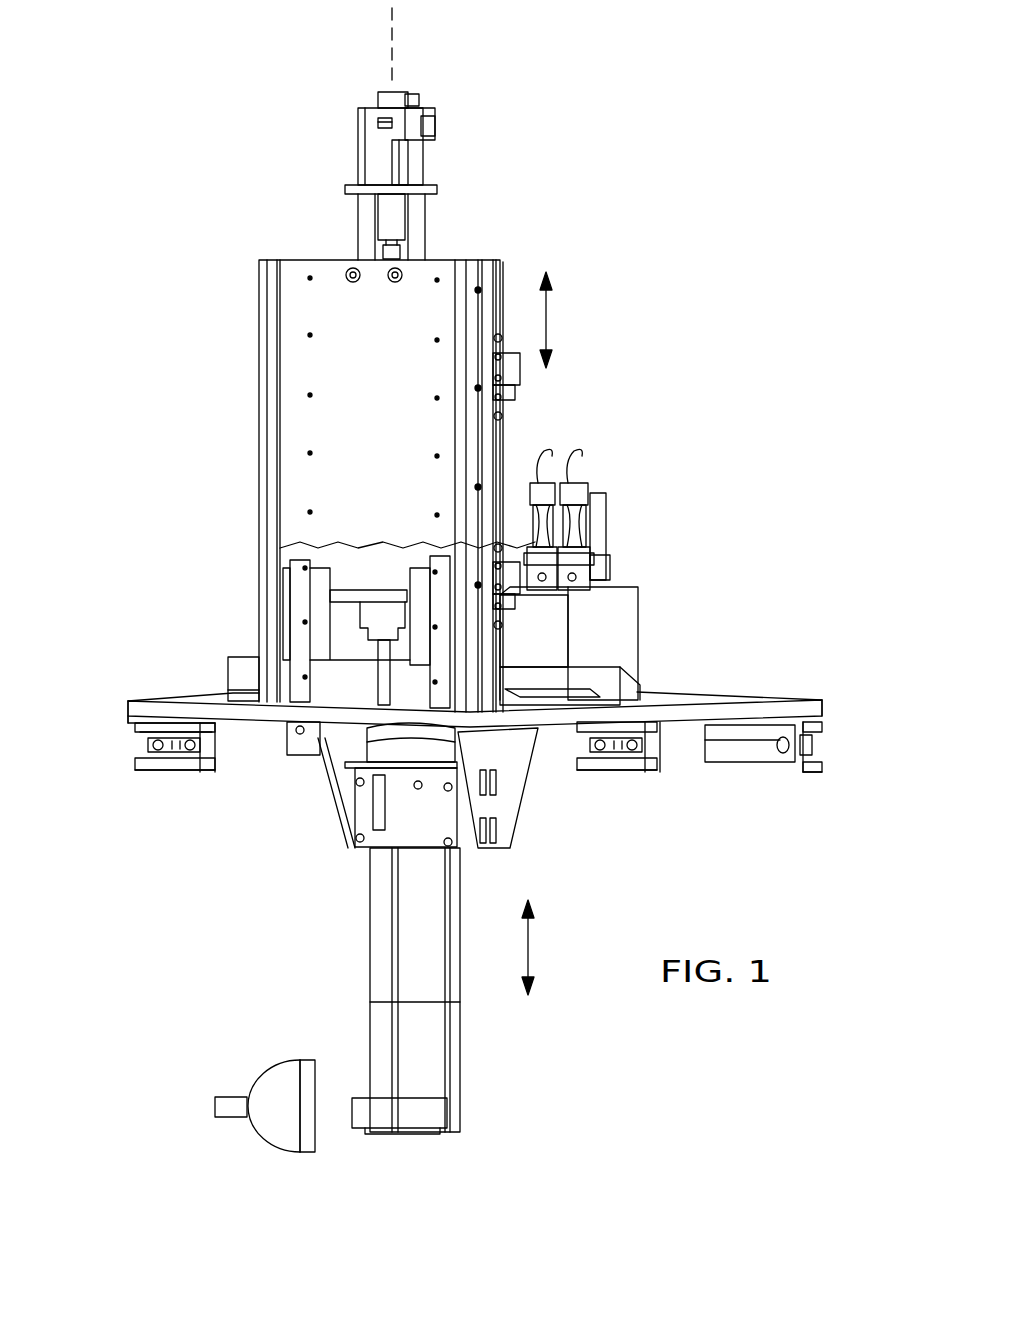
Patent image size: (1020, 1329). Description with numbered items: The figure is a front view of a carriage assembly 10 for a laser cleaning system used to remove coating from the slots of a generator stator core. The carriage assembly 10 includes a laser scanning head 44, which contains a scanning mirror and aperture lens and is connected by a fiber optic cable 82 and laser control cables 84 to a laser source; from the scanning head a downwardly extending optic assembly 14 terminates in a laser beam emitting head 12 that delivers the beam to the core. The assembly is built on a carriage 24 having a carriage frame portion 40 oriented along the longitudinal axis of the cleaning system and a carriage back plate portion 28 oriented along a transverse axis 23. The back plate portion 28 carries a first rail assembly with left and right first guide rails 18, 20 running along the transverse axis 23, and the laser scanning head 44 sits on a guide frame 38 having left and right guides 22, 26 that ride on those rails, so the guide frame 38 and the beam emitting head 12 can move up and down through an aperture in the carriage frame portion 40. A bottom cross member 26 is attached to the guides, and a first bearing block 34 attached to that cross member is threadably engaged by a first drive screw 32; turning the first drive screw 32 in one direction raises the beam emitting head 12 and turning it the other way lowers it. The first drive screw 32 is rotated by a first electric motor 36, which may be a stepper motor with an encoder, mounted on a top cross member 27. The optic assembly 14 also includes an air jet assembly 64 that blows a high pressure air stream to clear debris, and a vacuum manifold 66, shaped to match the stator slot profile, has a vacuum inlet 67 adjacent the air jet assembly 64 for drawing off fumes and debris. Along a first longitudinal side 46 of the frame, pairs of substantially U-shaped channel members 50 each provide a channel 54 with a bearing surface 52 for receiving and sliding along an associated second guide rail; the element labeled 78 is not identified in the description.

The carriage assembly 10 is at (700, 133).
The laser beam emitting head 12 is at (478, 1113).
The optic assembly 14 is at (368, 966).
The left first guide rail 18 is at (442, 555).
The right first guide rail 20 is at (285, 540).
The left guide 22 is at (453, 708).
The transverse axis 23 is at (390, 18).
The carriage 24 is at (677, 697).
The right guide 26 is at (345, 551).
The top cross member 27 is at (345, 192).
The carriage back plate portion 28 is at (258, 263).
The first drive screw 32 is at (506, 432).
The first bearing block 34 is at (308, 740).
The first electric motor 36 is at (358, 135).
The guide frame 38 is at (228, 689).
The carriage frame portion 40 is at (818, 697).
The laser scanning head 44 is at (639, 605).
The first longitudinal side 46 is at (140, 703).
The U-shaped channel member 50 is at (150, 770).
The bearing surface 52 is at (203, 727).
The channel 54 is at (140, 755).
The air jet assembly 64 is at (362, 1108).
The vacuum manifold 66 is at (275, 1133).
The vacuum inlet 67 is at (307, 1077).
The block 78 is at (728, 760).
The fiber optic cable 82 is at (596, 523).
The laser control cables 84 is at (556, 463).